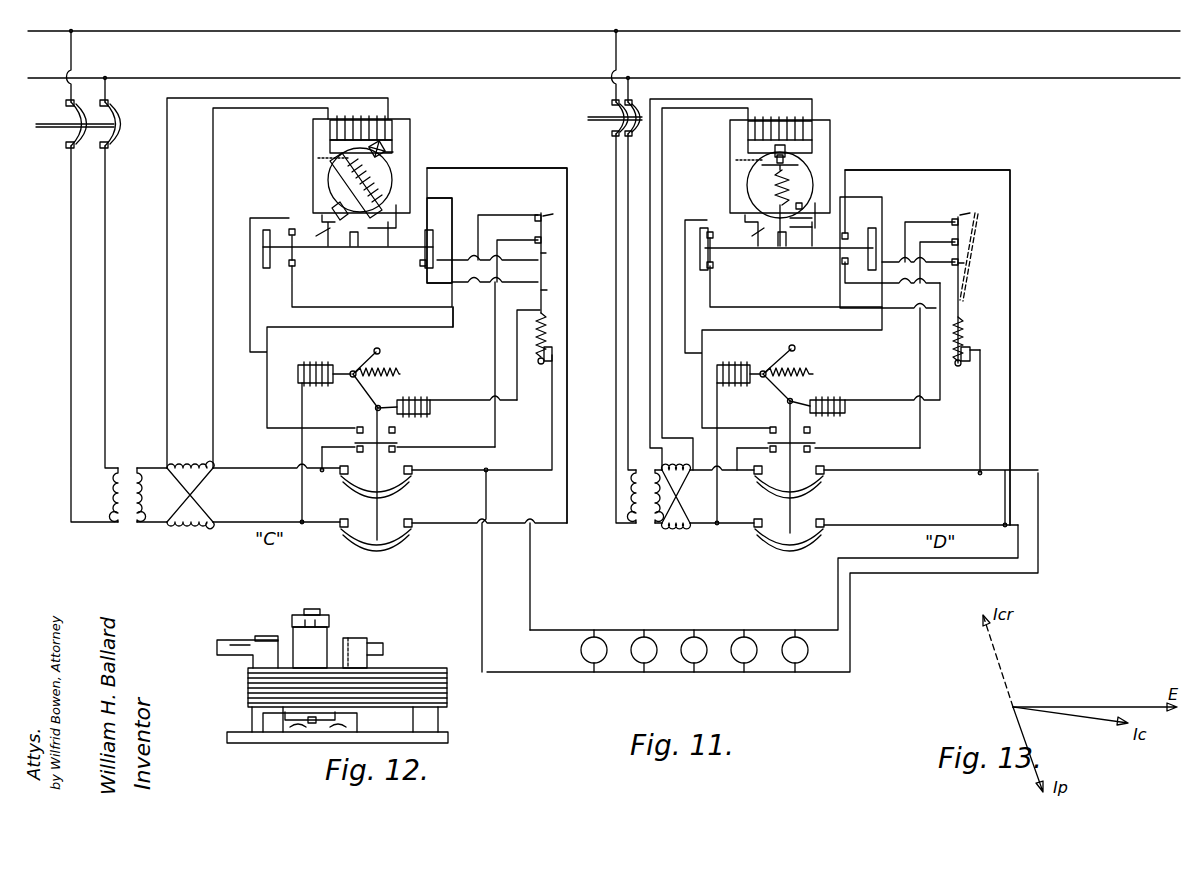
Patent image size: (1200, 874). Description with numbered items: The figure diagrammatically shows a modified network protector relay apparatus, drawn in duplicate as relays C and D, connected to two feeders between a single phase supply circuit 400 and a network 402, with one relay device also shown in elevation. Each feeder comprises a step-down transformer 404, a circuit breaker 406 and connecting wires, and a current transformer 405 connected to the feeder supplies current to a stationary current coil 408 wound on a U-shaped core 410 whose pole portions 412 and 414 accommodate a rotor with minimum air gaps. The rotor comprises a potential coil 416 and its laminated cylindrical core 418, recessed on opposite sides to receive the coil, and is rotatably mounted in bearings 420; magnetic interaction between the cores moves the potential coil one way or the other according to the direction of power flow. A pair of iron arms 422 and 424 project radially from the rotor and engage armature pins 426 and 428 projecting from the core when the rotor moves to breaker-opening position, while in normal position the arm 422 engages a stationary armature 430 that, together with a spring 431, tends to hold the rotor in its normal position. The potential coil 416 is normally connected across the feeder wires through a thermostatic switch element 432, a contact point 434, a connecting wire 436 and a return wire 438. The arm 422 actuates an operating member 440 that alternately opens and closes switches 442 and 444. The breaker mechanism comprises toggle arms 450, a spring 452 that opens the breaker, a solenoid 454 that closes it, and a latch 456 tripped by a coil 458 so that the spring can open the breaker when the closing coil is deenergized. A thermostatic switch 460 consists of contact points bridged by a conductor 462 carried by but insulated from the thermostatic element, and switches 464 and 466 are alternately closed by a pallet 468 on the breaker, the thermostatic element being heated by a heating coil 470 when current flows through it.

In FIG. 11, the single phase supply circuit 400 is at (470, 34).
In FIG. 11, the network 402 is at (586, 630).
In FIG. 11, the step-down transformer 404 is at (128, 470).
In FIG. 11, the current transformer 405 is at (190, 468).
In FIG. 11, the circuit breaker 406 is at (385, 505).
In FIG. 11, the current coil 408 is at (376, 120).
In FIG. 11, the core 410 is at (410, 140).
In FIG. 12, the core 410 is at (425, 672).
In FIG. 11, the pole portion 412 is at (320, 168).
In FIG. 11, the pole portion 414 is at (412, 186).
In FIG. 11, the potential coil 416 is at (390, 250).
In FIG. 11, the core 418 is at (330, 200).
In FIG. 12, the core 418 is at (248, 684).
In FIG. 12, the bearings 420 is at (311, 610).
In FIG. 11, the iron arm 422 is at (344, 222).
In FIG. 12, the iron arm 422 is at (222, 640).
In FIG. 11, the iron arm 424 is at (384, 147).
In FIG. 12, the iron arm 424 is at (383, 648).
In FIG. 11, the armature 426 is at (530, 232).
In FIG. 12, the armature 426 is at (258, 636).
In FIG. 11, the armature 428 is at (393, 153).
In FIG. 12, the armature 428 is at (358, 638).
In FIG. 11, the stationary armature 430 is at (422, 264).
In FIG. 11, the spring 431 is at (325, 158).
In FIG. 11, the thermostatic switch element 432 is at (548, 290).
In FIG. 11, the contact point 434 is at (548, 253).
In FIG. 11, the connecting wire 436 is at (455, 230).
In FIG. 11, the return wire 438 is at (528, 168).
In FIG. 11, the operating member 440 is at (312, 250).
In FIG. 11, the switch 442 is at (287, 266).
In FIG. 11, the switch 444 is at (430, 312).
In FIG. 11, the toggle arms 450 is at (366, 368).
In FIG. 11, the spring 452 is at (392, 372).
In FIG. 11, the solenoid 454 is at (298, 380).
In FIG. 11, the latch 456 is at (365, 405).
In FIG. 11, the coil 458 is at (414, 400).
In FIG. 11, the thermostatic switch 460 is at (540, 213).
In FIG. 11, the conductor 462 is at (548, 215).
In FIG. 11, the switch 464 is at (396, 431).
In FIG. 11, the switch 466 is at (396, 452).
In FIG. 11, the pallet 468 is at (355, 441).
In FIG. 11, the heating coil 470 is at (550, 334).